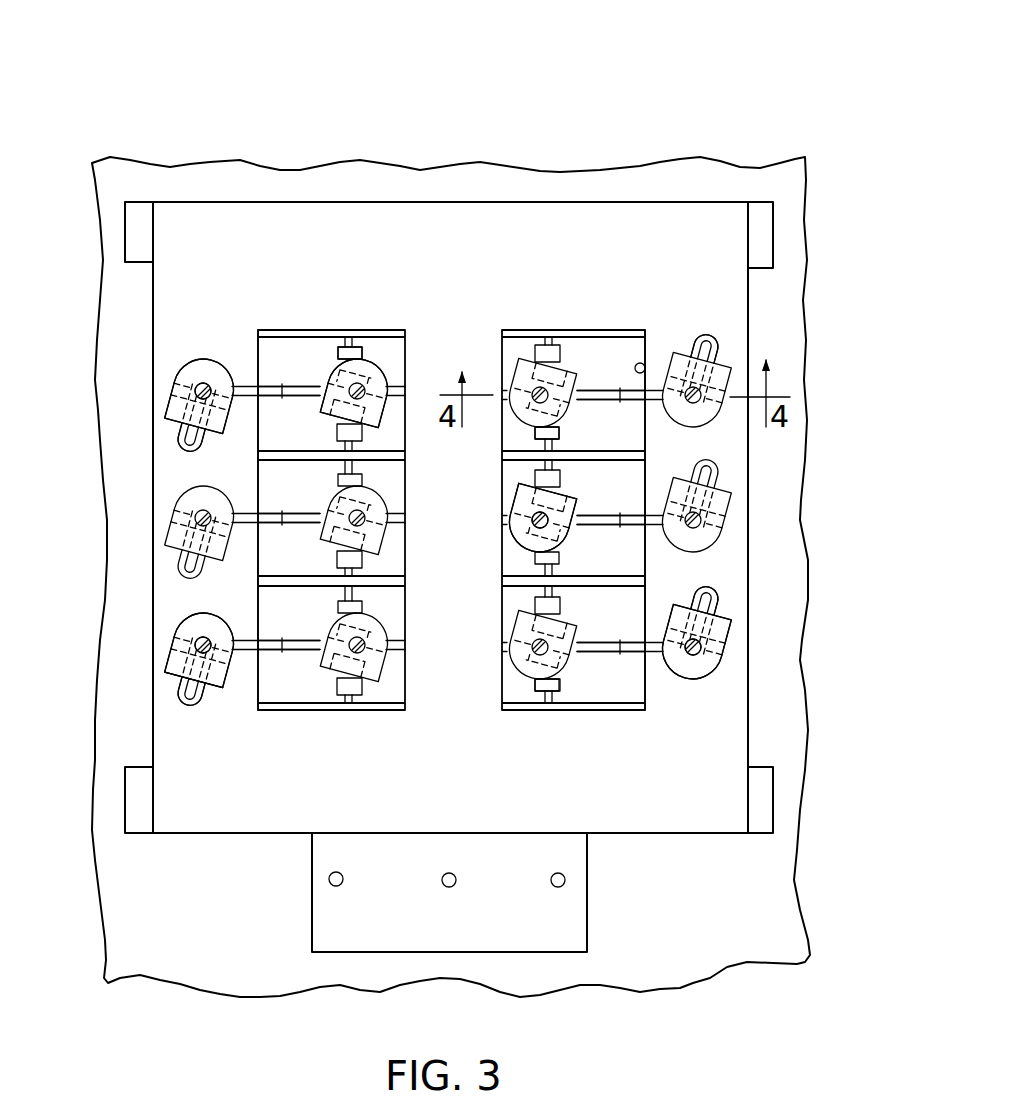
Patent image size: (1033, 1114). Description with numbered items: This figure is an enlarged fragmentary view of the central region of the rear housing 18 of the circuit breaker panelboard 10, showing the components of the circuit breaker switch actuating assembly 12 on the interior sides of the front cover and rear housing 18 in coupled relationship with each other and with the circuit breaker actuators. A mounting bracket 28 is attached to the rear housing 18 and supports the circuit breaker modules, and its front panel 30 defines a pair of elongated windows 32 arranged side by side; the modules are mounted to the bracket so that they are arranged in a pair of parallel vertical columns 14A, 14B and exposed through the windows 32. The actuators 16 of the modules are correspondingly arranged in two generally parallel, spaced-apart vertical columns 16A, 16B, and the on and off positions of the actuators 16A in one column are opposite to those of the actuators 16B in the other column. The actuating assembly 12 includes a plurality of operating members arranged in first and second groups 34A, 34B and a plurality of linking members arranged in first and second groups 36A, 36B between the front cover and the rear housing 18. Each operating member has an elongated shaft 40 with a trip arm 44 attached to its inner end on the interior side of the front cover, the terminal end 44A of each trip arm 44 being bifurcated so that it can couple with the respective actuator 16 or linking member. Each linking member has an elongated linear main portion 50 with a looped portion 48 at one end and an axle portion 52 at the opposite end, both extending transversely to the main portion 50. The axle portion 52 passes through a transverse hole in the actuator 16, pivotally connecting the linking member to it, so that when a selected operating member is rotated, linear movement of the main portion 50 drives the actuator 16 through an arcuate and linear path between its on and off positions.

The circuit breaker panelboard 10 is at (700, 135).
The circuit breaker switch actuating assembly 12 is at (447, 712).
The first column of circuit breaker modules 14A is at (568, 328).
The second column of circuit breaker modules 14B is at (308, 330).
The actuator 16 is at (347, 694).
The first column of actuators 16A is at (553, 343).
The second column of actuators 16B is at (372, 346).
The rear housing 18 is at (713, 978).
The mounting bracket 28 is at (223, 836).
The front panel 30 is at (446, 228).
The elongated window 32 is at (258, 357).
The first group of operating members 34A is at (391, 360).
The second group of operating members 34B is at (213, 350).
The first group of linking members 36A is at (603, 662).
The second group of linking members 36B is at (284, 657).
The elongated shaft 40 is at (197, 386).
The trip arm 44 is at (172, 403).
The terminal end of trip arm 44A is at (213, 692).
The looped portion 48 is at (185, 446).
The elongated linear main portion 50 is at (241, 384).
The axle portion 52 is at (346, 337).